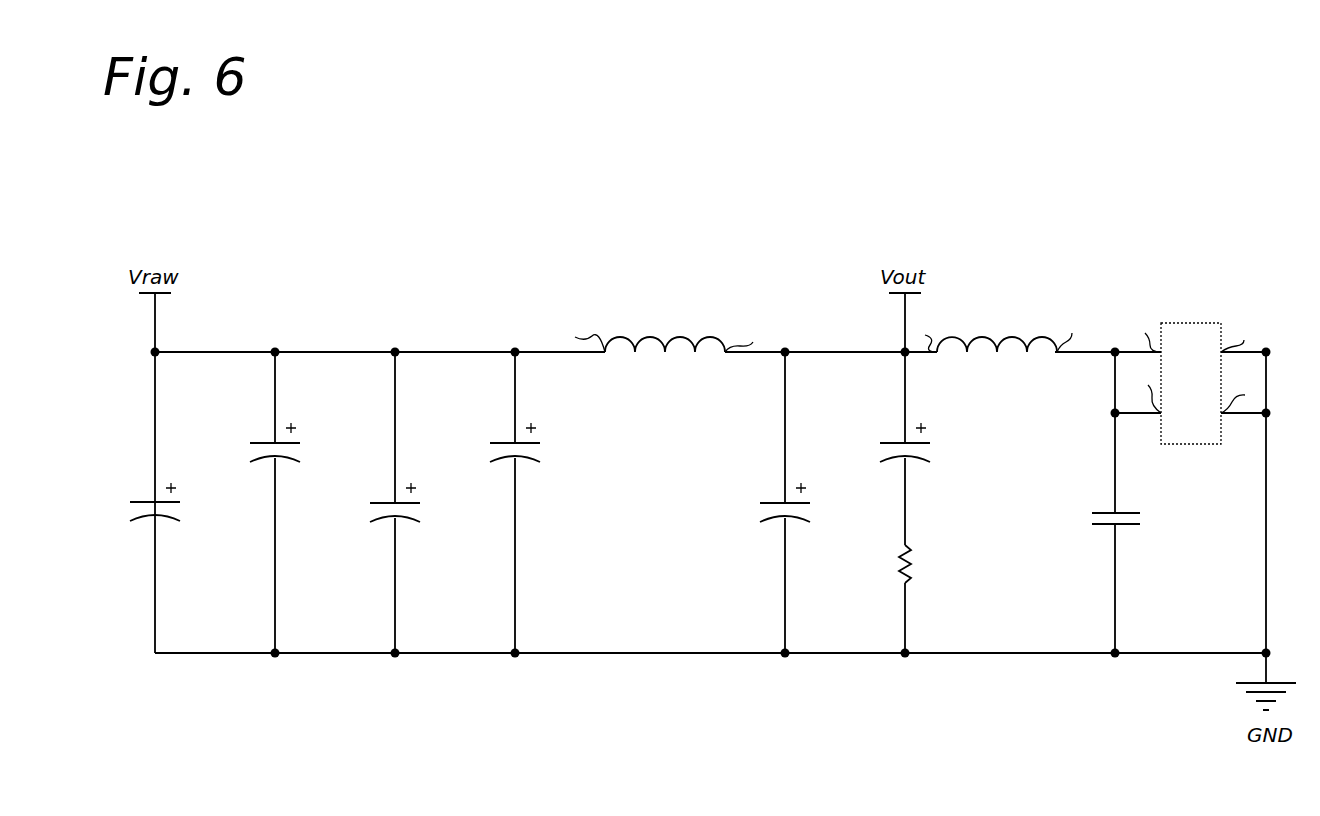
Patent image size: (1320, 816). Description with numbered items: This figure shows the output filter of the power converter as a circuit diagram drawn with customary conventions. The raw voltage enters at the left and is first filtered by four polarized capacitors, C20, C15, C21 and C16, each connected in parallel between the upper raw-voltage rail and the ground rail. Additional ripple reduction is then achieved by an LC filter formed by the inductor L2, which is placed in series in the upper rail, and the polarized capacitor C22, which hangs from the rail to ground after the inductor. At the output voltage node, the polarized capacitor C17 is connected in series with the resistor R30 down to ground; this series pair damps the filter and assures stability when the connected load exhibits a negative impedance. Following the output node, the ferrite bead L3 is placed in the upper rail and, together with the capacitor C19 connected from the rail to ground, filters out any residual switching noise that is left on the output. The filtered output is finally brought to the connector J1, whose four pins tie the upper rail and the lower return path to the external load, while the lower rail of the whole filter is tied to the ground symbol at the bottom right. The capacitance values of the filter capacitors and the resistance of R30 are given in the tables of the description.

The capacitor C20 is at (179, 504).
The capacitor C15 is at (299, 445).
The capacitor C21 is at (419, 505).
The capacitor C16 is at (539, 445).
The capacitor C22 is at (809, 505).
The capacitor C17 is at (930, 445).
The capacitor C19 is at (1141, 518).
The resistor R30 is at (931, 564).
The inductor L2 is at (661, 326).
The ferrite bead L3 is at (998, 328).
The connector J1 is at (1188, 340).